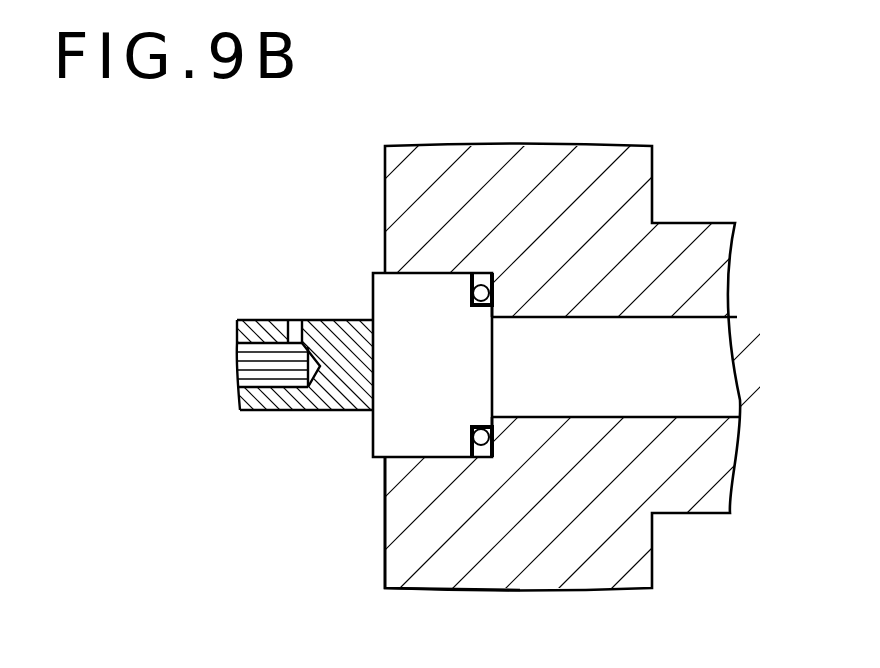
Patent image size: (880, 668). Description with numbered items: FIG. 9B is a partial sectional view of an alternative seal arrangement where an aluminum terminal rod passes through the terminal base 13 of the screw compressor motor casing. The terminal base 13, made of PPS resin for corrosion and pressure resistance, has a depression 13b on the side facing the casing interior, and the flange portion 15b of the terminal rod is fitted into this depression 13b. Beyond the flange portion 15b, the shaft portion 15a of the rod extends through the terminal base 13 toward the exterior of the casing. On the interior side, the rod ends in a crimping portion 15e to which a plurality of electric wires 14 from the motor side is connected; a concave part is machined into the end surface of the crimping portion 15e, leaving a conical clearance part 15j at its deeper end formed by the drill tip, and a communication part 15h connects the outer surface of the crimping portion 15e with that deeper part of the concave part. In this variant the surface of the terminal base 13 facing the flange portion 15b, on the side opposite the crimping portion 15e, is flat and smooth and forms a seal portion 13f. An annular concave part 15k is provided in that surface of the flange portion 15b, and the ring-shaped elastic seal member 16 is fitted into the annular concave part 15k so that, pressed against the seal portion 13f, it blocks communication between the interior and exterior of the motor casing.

The terminal base 13 is at (385, 184).
The depression 13b is at (438, 458).
The seal portion 13f is at (493, 458).
The electric wires 14 is at (328, 318).
The shaft portion 15a is at (688, 335).
The flange portion 15b is at (435, 288).
The crimping portion 15e is at (268, 398).
The communication part 15h is at (272, 316).
The conical clearance part 15j is at (323, 382).
The annular concave part 15k is at (472, 283).
The seal member 16 is at (484, 290).